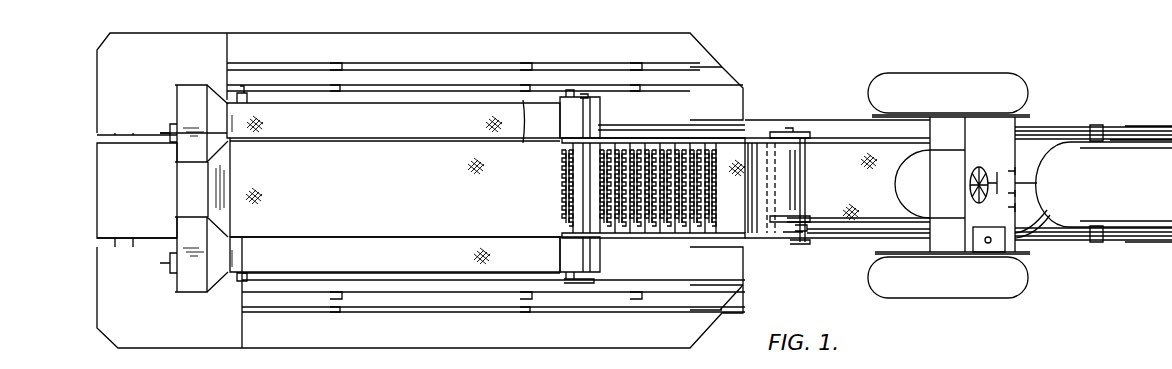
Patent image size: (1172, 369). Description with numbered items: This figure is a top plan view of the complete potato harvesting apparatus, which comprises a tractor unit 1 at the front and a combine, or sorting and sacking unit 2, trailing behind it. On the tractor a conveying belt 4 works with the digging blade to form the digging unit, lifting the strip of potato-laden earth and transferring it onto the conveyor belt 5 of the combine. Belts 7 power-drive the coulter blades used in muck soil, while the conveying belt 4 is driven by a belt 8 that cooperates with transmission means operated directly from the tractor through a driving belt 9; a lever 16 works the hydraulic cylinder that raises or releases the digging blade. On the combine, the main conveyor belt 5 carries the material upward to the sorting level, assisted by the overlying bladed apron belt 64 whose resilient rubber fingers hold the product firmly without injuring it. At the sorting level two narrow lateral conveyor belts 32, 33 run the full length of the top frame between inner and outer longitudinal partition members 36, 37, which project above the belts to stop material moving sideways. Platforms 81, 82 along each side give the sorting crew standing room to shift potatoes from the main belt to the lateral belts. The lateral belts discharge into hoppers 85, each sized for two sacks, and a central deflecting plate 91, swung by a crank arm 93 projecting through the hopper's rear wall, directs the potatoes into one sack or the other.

The tractor unit 1 is at (1137, 121).
The combine or sorting and sacking unit 2 is at (618, 21).
The conveying belt 4 is at (828, 152).
The conveyor belt 5 is at (428, 152).
The belts 7 is at (1073, 148).
The belt 8 is at (797, 132).
The driving belt 9 is at (866, 221).
The lever 16 is at (988, 240).
The lateral conveyor belt 32 is at (400, 118).
The lateral conveyor belt 33 is at (405, 250).
The inner longitudinal partition member 36 is at (355, 141).
The outer longitudinal partition member 37 is at (507, 275).
The bladed conveyor or apron belt 64 is at (677, 157).
The platform 81 is at (502, 337).
The platform 82 is at (328, 43).
The hopper 85 is at (228, 235).
The deflecting plate 91 is at (188, 152).
The crank arm 93 is at (168, 128).